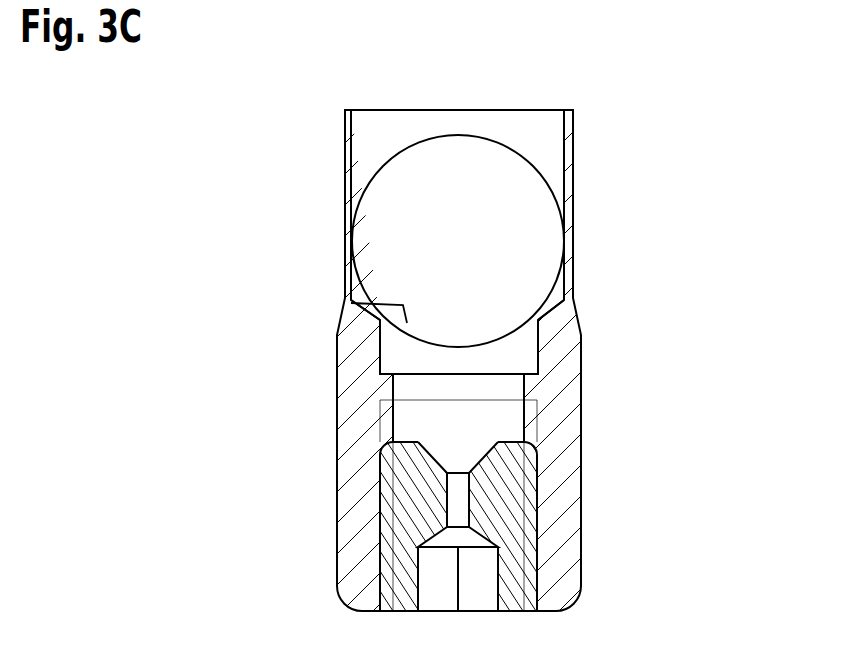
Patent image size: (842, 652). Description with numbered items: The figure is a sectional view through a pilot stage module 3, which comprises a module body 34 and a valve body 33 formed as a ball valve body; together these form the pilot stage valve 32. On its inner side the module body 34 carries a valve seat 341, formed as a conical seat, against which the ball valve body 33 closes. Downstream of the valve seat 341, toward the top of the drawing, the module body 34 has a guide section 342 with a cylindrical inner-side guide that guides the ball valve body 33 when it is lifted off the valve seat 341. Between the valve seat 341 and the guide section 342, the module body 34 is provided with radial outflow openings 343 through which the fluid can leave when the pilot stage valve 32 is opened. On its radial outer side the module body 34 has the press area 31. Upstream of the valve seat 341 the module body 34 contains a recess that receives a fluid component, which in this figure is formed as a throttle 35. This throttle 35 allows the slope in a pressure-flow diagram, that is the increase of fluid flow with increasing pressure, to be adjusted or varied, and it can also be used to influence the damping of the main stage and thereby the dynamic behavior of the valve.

The pilot stage module 3 is at (638, 121).
The pilot stage valve 32 is at (421, 322).
The press area 31 is at (337, 448).
The valve body 33 is at (405, 183).
The module body 34 is at (358, 527).
The throttle 35 is at (413, 492).
The valve seat 341 is at (407, 322).
The guide section 342 is at (355, 140).
The radial outflow openings 343 is at (351, 262).